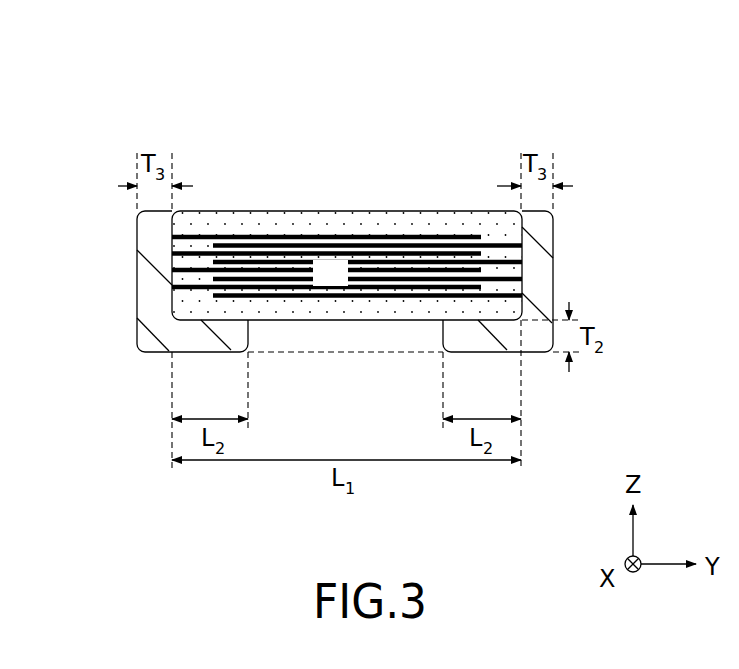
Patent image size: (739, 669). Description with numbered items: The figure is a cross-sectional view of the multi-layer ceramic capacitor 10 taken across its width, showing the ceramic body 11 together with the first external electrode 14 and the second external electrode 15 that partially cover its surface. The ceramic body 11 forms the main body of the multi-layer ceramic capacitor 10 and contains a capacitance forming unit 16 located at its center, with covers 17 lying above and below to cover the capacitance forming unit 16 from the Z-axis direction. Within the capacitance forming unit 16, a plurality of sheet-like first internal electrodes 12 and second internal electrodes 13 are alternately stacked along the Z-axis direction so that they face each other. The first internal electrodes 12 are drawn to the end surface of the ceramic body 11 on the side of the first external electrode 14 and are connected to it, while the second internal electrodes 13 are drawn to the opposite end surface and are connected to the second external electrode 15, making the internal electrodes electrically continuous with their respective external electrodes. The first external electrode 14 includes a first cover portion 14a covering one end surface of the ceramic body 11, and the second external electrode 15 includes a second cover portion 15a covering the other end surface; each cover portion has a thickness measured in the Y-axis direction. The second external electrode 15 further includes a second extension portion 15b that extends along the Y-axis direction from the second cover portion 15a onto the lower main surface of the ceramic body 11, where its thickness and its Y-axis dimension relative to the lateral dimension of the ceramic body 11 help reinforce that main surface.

The multi-layer ceramic capacitor 10 is at (575, 118).
The ceramic body 11 is at (337, 330).
The first internal electrodes 12 is at (278, 287).
The second internal electrodes 13 is at (360, 295).
The first external electrode 14 is at (103, 365).
The first cover portion 14a is at (137, 262).
The second external electrode 15 is at (587, 365).
The second cover portion 15a is at (532, 268).
The second extension portion 15b is at (473, 333).
The capacitance forming unit 16 is at (330, 272).
The covers 17 is at (263, 223).